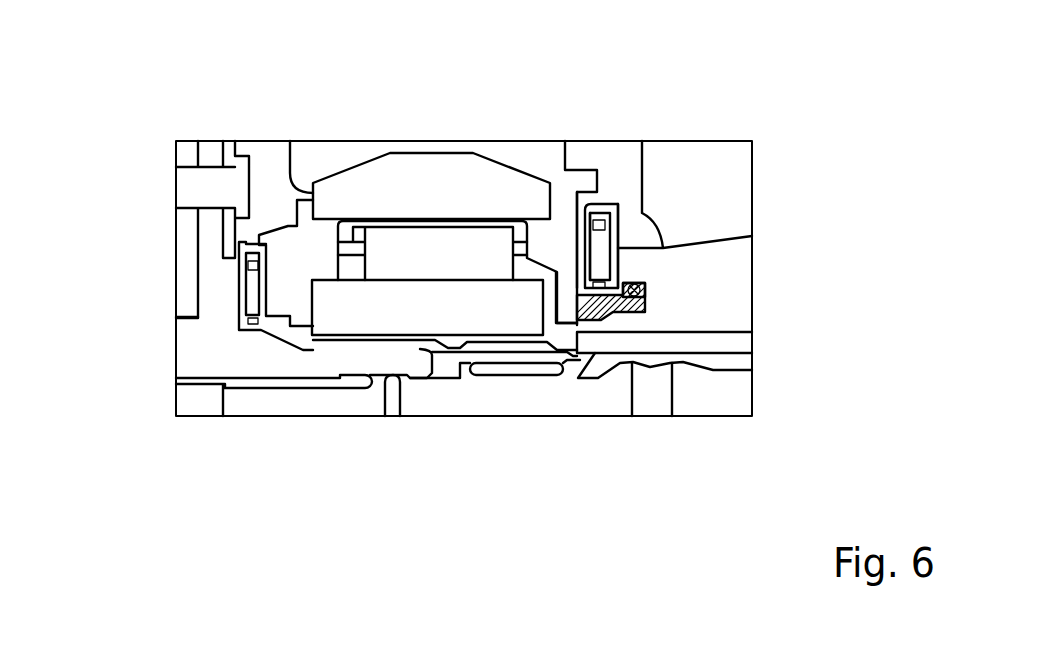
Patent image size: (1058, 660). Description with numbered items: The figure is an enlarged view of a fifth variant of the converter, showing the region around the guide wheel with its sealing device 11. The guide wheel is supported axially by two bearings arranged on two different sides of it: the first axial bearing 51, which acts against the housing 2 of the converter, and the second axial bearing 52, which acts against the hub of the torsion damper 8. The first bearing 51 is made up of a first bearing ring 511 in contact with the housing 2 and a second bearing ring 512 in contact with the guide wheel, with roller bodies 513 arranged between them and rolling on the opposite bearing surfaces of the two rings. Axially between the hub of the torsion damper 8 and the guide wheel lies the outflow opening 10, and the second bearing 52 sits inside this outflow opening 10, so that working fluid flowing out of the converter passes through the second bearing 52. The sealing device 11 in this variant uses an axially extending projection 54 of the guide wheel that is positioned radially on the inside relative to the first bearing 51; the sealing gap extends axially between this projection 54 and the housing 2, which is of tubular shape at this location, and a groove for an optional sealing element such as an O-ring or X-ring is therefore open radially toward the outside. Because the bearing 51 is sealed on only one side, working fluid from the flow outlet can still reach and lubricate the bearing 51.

The housing 2 is at (723, 254).
The torsion damper 8 is at (228, 346).
The outflow opening 10 is at (249, 242).
The sealing device 11 is at (652, 303).
The first axial bearing 51 is at (627, 267).
The first bearing ring 511 is at (621, 214).
The second bearing ring 512 is at (578, 263).
The roller bodies 513 is at (598, 248).
The second axial bearing 52 is at (236, 283).
The projection 54 is at (598, 312).